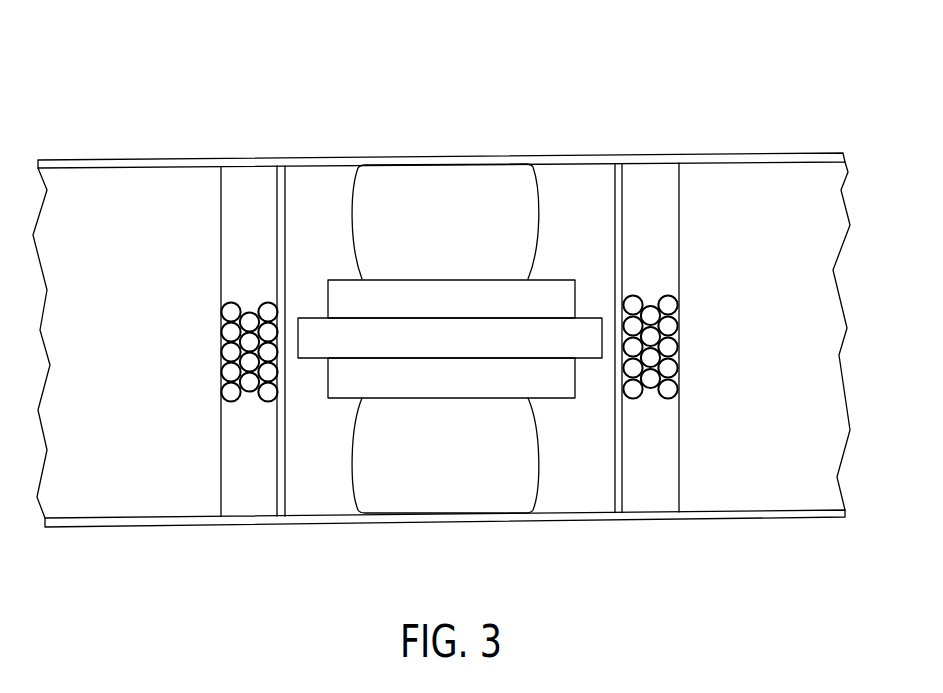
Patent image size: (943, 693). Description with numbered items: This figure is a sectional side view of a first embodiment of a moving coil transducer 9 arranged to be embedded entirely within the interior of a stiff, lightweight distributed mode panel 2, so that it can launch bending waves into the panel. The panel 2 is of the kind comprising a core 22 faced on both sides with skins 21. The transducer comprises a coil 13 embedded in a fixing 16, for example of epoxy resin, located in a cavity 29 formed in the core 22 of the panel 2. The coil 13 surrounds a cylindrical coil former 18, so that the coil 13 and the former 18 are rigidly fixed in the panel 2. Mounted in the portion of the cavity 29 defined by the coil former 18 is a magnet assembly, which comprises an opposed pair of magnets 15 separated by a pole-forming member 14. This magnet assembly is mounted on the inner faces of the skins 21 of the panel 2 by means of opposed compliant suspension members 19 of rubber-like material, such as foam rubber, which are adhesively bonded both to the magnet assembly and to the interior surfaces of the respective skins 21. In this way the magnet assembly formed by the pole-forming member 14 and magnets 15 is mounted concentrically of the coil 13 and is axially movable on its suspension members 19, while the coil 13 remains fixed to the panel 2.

The distributed mode panel 2 is at (441, 334).
The moving coil transducer 9 is at (442, 124).
The coil 13 is at (249, 386).
The pole-forming member 14 is at (310, 332).
The magnets 15 is at (553, 295).
The fixing 16 is at (246, 187).
The coil former 18 is at (285, 500).
The compliant suspension members 19 is at (497, 165).
The skins 21 is at (750, 153).
The core 22 is at (110, 187).
The cavity 29 is at (565, 496).